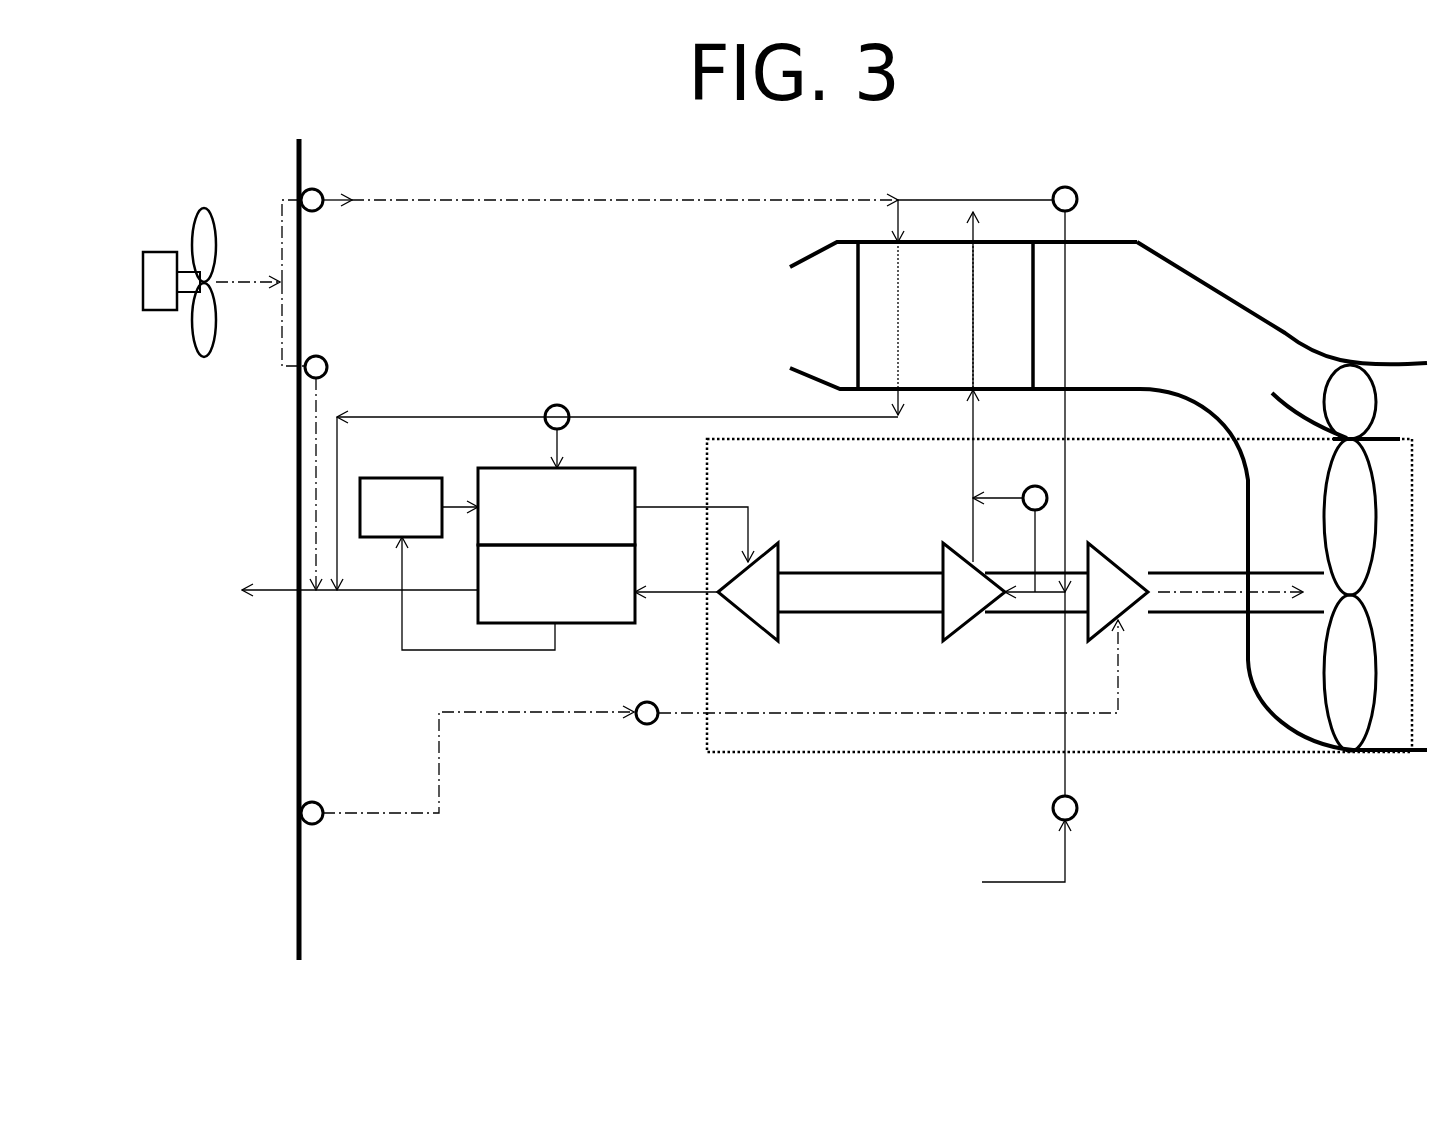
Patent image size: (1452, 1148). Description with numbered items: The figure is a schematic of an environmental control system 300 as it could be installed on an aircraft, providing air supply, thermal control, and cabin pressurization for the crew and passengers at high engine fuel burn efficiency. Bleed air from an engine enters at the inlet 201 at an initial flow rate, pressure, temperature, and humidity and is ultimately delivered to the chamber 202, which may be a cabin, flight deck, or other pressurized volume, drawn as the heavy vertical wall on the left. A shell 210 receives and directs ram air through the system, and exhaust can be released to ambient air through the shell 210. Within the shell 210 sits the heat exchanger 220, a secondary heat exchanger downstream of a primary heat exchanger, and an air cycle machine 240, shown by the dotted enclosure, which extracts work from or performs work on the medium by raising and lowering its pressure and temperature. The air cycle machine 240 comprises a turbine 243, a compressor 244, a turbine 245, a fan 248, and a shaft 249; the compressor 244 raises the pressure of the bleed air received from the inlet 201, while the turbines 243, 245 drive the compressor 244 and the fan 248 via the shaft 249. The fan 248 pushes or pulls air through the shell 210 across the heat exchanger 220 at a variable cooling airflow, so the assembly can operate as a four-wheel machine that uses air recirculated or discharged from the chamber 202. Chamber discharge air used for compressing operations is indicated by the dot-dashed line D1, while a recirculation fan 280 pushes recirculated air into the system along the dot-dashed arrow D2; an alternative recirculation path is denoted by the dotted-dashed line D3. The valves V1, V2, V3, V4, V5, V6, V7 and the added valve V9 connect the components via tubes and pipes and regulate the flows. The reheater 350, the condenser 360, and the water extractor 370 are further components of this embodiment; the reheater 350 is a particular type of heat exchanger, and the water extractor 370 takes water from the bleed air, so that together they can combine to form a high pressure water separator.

The system 300 is at (1353, 129).
The chamber 202 is at (297, 152).
The recirculation fan 280 is at (178, 352).
The inlet 201 is at (996, 857).
The shell 210 is at (1200, 278).
The heat exchanger 220 is at (925, 330).
The air cycle machine 240 is at (1233, 752).
The turbine 243 is at (737, 605).
The compressor 244 is at (950, 605).
The turbine 245 is at (1094, 605).
The fan 248 is at (1302, 653).
The shaft 249 is at (1187, 613).
The reheater 350 is at (536, 520).
The condenser 360 is at (536, 603).
The water extractor 370 is at (381, 520).
The valve V1 is at (1075, 817).
The valve V2 is at (1075, 190).
The valve V3 is at (1030, 487).
The valve V4 is at (320, 822).
The valve V5 is at (655, 705).
The valve V6 is at (316, 211).
The valve V7 is at (566, 409).
The valve V9 is at (298, 378).
The chamber discharge air line D1 is at (438, 712).
The recirculation air line D2 is at (497, 196).
The alternative recirculation air path D3 is at (312, 542).